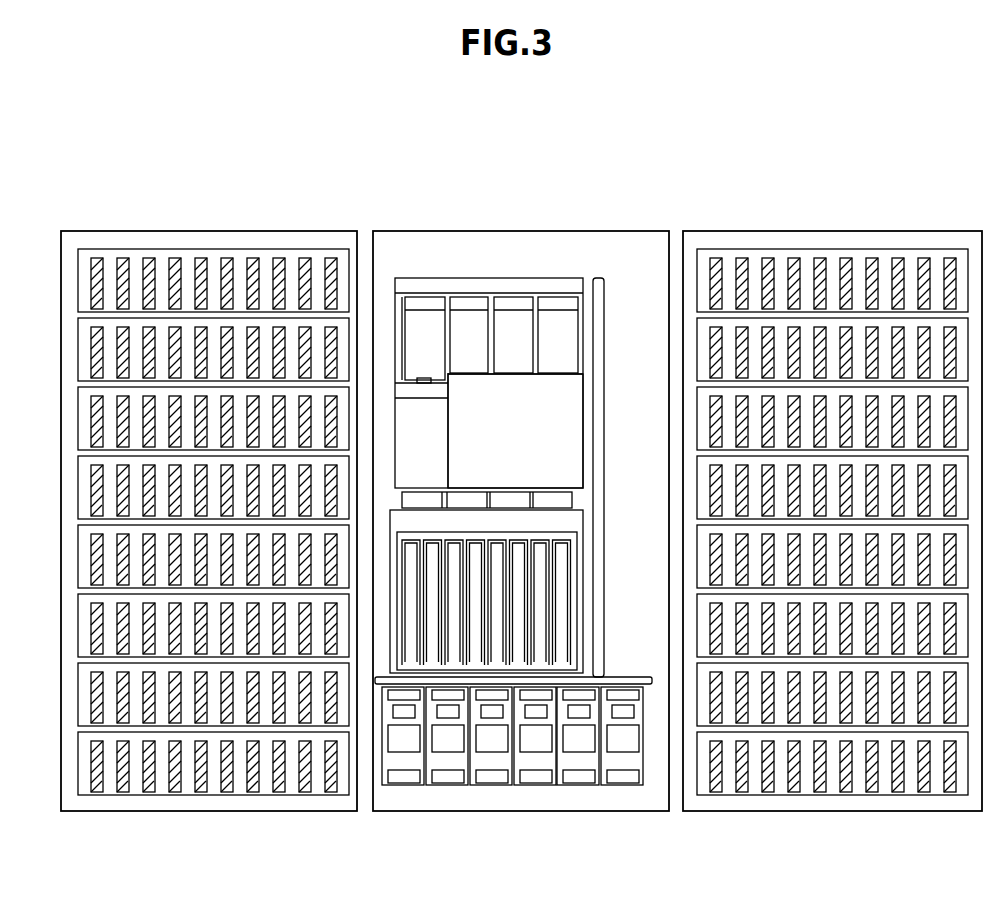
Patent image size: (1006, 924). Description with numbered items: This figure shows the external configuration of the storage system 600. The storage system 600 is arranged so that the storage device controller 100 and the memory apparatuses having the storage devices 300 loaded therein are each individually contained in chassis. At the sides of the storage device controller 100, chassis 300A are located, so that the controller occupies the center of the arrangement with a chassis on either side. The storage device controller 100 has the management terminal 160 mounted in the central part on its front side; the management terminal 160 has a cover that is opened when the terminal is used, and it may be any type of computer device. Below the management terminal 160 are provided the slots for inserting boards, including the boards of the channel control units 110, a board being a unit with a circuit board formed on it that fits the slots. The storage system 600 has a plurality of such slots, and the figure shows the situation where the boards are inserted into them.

The storage system 600 is at (91, 189).
The storage devices 300 is at (215, 230).
The chassis 300A is at (848, 230).
The storage device controller 100 is at (432, 230).
The channel control units 110 is at (411, 660).
The management terminal 160 is at (553, 392).